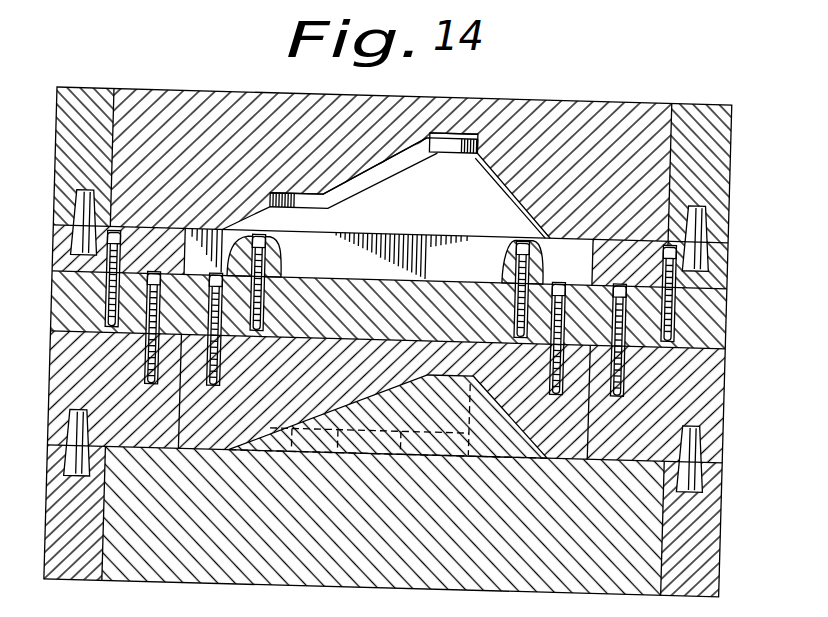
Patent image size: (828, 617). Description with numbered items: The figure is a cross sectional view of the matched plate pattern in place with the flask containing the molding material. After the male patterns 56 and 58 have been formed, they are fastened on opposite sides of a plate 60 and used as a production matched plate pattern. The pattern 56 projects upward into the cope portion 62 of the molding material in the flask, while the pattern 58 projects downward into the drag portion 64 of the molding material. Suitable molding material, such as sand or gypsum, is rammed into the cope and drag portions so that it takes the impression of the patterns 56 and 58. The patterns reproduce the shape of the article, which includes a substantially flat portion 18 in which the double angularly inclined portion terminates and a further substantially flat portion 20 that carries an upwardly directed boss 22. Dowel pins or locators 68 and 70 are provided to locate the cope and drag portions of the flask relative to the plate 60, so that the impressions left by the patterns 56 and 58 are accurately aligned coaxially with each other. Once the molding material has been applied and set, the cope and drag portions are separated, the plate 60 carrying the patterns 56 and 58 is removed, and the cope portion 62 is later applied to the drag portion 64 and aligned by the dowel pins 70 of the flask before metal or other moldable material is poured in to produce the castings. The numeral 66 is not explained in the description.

The substantially flat portion 18 is at (353, 197).
The substantially flat portion 20 is at (474, 113).
The upwardly directed boss 22 is at (456, 105).
The male pattern 56 is at (375, 68).
The male pattern 58 is at (384, 396).
The plate 60 is at (659, 218).
The cope portion 62 is at (662, 178).
The drag portion 64 is at (499, 472).
The die shoe plate 66 is at (388, 330).
The dowel pin 68 is at (394, 230).
The dowel pin 70 is at (390, 451).